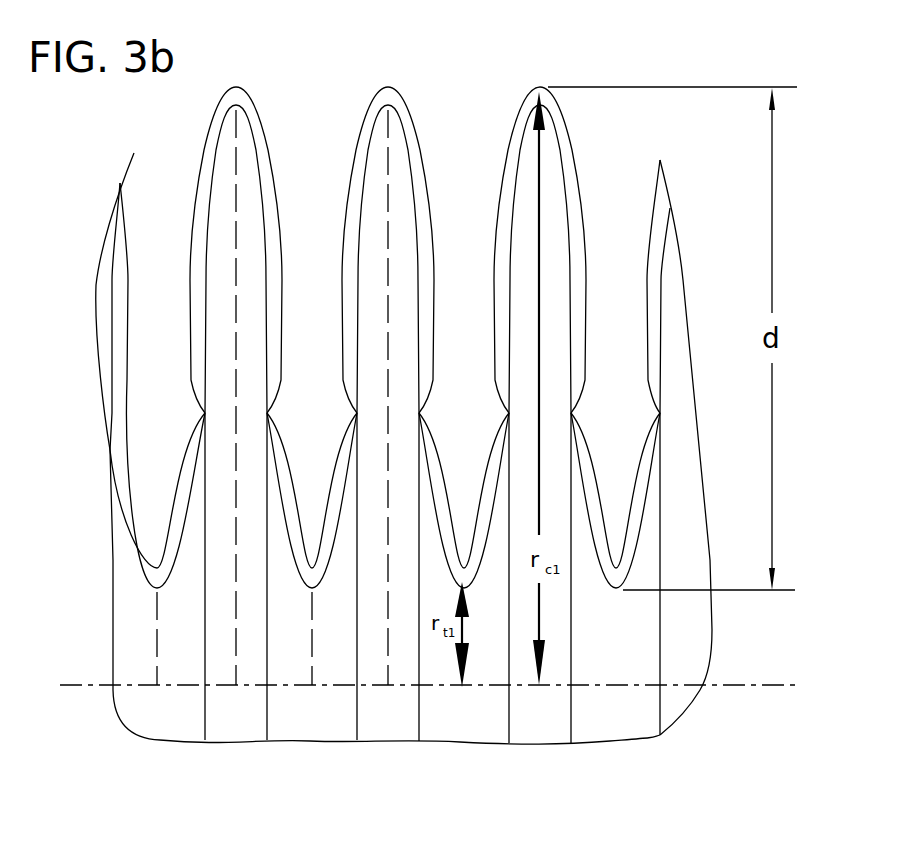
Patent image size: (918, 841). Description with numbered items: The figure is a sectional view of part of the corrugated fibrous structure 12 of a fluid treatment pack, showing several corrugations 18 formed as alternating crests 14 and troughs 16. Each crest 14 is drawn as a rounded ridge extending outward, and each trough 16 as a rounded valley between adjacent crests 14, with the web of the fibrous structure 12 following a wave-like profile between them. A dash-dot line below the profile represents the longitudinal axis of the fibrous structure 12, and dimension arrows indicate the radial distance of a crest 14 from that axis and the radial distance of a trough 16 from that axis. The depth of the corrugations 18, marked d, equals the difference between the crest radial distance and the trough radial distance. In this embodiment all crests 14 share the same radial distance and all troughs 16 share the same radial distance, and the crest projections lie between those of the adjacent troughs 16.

The fibrous structure 12 is at (122, 360).
The crest 14 is at (388, 352).
The trough 16 is at (157, 592).
The corrugation 18 is at (263, 128).